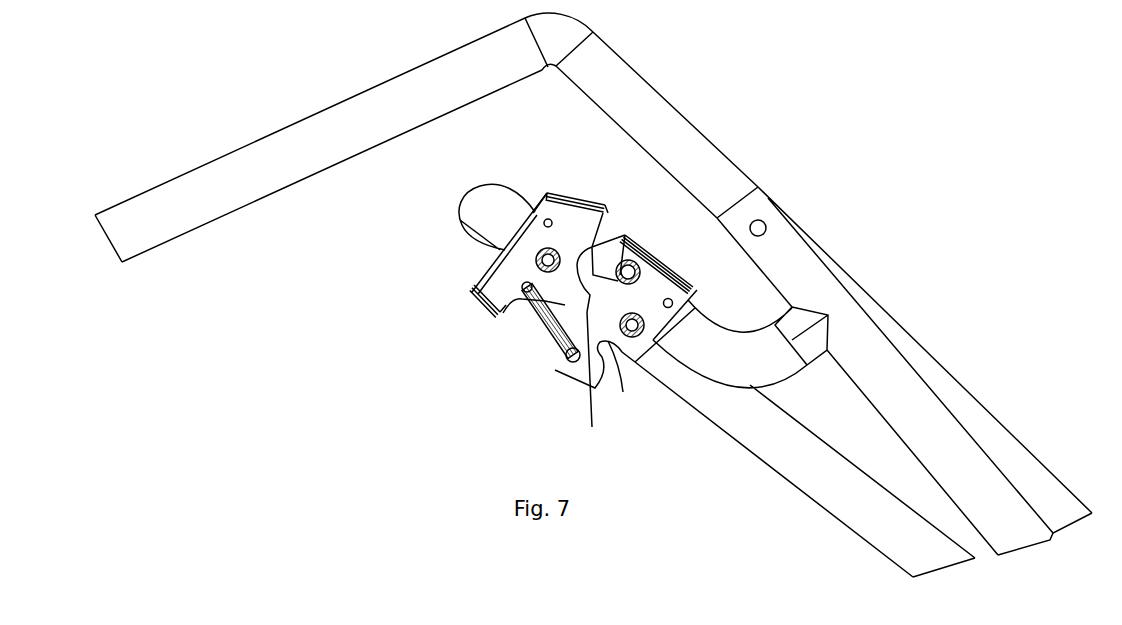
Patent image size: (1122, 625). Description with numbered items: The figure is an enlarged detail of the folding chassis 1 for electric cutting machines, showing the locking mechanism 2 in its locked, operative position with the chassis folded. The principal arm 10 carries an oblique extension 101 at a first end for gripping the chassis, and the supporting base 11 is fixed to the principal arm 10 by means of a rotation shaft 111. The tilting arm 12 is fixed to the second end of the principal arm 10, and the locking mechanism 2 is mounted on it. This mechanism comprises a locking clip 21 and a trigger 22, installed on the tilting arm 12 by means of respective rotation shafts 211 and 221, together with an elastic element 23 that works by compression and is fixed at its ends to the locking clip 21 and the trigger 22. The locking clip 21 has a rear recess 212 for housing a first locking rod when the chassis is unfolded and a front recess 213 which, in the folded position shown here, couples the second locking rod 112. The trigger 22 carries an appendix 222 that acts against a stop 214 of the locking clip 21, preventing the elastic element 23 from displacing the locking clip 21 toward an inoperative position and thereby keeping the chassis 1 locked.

The folding chassis 1 is at (627, 63).
The oblique extension 101 is at (355, 117).
The principal arm 10 is at (890, 330).
The supporting base 11 is at (898, 410).
The rotation shaft 111 is at (768, 220).
The second locking rod 112 is at (665, 257).
The tilting arm 12 is at (800, 432).
The locking mechanism 2 is at (547, 185).
The locking clip 21 is at (560, 366).
The rotation shaft 211 is at (637, 338).
The rear recess 212 is at (613, 373).
The front recess 213 is at (623, 232).
The stop 214 is at (594, 379).
The trigger 22 is at (472, 297).
The rotation shaft 221 is at (462, 222).
The appendix 222 is at (580, 292).
The elastic element 23 is at (540, 323).